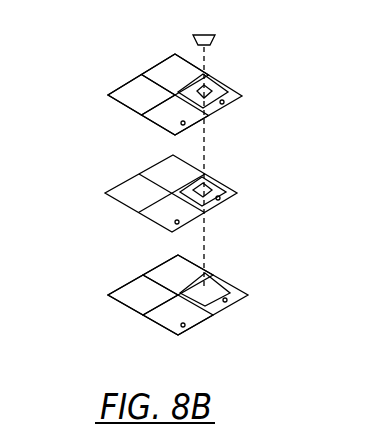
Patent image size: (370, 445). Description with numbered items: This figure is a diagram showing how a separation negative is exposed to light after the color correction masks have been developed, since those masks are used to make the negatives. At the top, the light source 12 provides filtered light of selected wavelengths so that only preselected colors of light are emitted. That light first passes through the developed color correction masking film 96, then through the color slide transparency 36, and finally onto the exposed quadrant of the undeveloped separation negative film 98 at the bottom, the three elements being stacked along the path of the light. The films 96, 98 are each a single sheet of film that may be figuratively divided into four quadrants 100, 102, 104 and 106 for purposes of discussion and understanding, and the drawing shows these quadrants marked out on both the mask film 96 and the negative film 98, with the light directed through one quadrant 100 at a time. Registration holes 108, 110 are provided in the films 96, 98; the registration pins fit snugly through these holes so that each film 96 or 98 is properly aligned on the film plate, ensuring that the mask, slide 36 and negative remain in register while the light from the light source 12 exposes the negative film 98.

The light source 12 is at (208, 33).
The color slide transparency 36 is at (211, 189).
The color correction masking film 96 is at (126, 114).
The separation negative film 98 is at (127, 313).
The quadrant 100 is at (222, 82).
The quadrant 102 is at (162, 118).
The quadrant 104 is at (128, 90).
The quadrant 106 is at (166, 71).
The registration hole 108 is at (187, 125).
The registration hole 110 is at (226, 104).